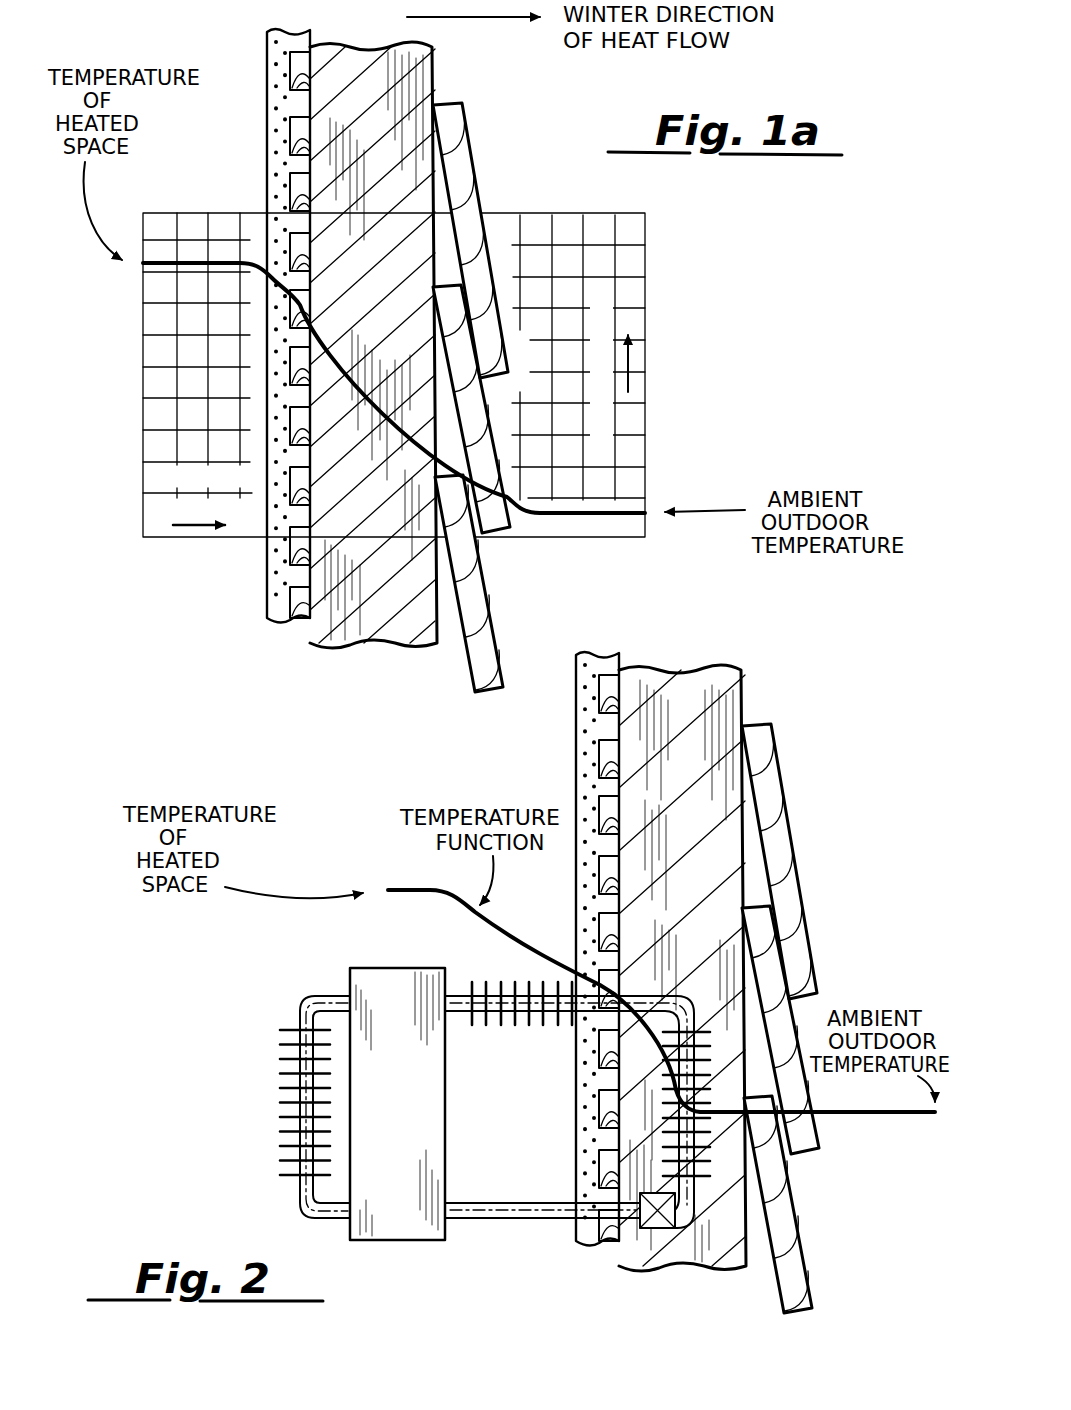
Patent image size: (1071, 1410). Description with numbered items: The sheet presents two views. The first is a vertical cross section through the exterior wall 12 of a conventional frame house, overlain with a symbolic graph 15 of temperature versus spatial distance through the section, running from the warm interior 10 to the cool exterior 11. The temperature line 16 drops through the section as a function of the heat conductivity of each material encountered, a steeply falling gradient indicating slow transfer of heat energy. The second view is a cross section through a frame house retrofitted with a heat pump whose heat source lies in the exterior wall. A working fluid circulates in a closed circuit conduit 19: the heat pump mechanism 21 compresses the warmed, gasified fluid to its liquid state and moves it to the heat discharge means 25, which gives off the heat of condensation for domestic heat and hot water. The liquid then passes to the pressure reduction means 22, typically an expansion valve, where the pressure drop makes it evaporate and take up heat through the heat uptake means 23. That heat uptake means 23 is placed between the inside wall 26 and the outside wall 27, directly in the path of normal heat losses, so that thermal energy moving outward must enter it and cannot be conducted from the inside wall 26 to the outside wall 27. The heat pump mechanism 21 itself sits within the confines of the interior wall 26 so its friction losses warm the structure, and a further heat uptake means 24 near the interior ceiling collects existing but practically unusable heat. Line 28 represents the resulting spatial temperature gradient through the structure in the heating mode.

In FIG. 1A, the warm interior 10 is at (203, 172).
In FIG. 1A, the cool exterior 11 is at (535, 172).
In FIG. 1A, the exterior wall 12 is at (360, 666).
In FIG. 1A, the symbolic graph 15 is at (143, 378).
In FIG. 1A, the line 16 is at (340, 349).
In FIG. 2, the closed circuit conduit 19 is at (532, 1200).
In FIG. 2, the heat pump mechanism 21 is at (403, 1225).
In FIG. 2, the pressure reduction means 22 is at (660, 1234).
In FIG. 2, the heat uptake means 23 is at (705, 1178).
In FIG. 2, the heat uptake means 24 is at (526, 1020).
In FIG. 2, the heat discharge means 25 is at (282, 1024).
In FIG. 2, the inside wall 26 is at (621, 782).
In FIG. 2, the outside wall 27 is at (790, 803).
In FIG. 2, the line 28 is at (530, 952).